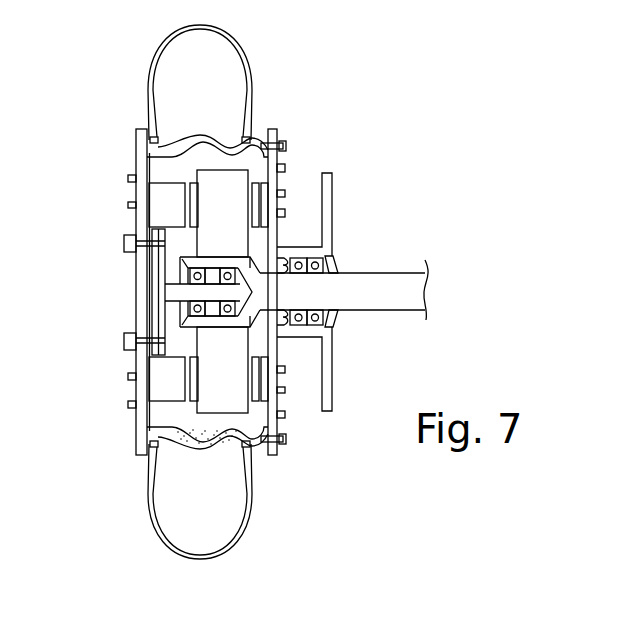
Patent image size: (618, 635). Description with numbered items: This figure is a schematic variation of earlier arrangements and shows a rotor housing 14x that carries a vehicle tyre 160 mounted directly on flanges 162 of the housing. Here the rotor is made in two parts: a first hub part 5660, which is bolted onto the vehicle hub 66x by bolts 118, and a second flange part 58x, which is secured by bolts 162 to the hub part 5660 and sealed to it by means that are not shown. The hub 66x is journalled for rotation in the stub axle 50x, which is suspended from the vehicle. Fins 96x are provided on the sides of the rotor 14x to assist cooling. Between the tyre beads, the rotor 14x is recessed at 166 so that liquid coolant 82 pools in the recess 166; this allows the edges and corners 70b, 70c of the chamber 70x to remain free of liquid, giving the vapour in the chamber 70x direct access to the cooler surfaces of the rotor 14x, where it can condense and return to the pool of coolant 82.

The vehicle tyre 160 is at (250, 73).
The second flange part 58x is at (258, 146).
The first hub part 5660 is at (136, 154).
The rotor housing 14x is at (110, 187).
The bolts 162 is at (288, 145).
The chamber 70x is at (175, 166).
The vehicle hub 66x is at (158, 292).
The bolts 118 is at (123, 340).
The fins 96x is at (128, 377).
The stub axle 50x is at (437, 288).
The edge/corner of chamber 70c is at (262, 427).
The liquid coolant 82 is at (200, 436).
The recess 166 is at (210, 450).
The edge/corner of chamber 70b is at (160, 445).